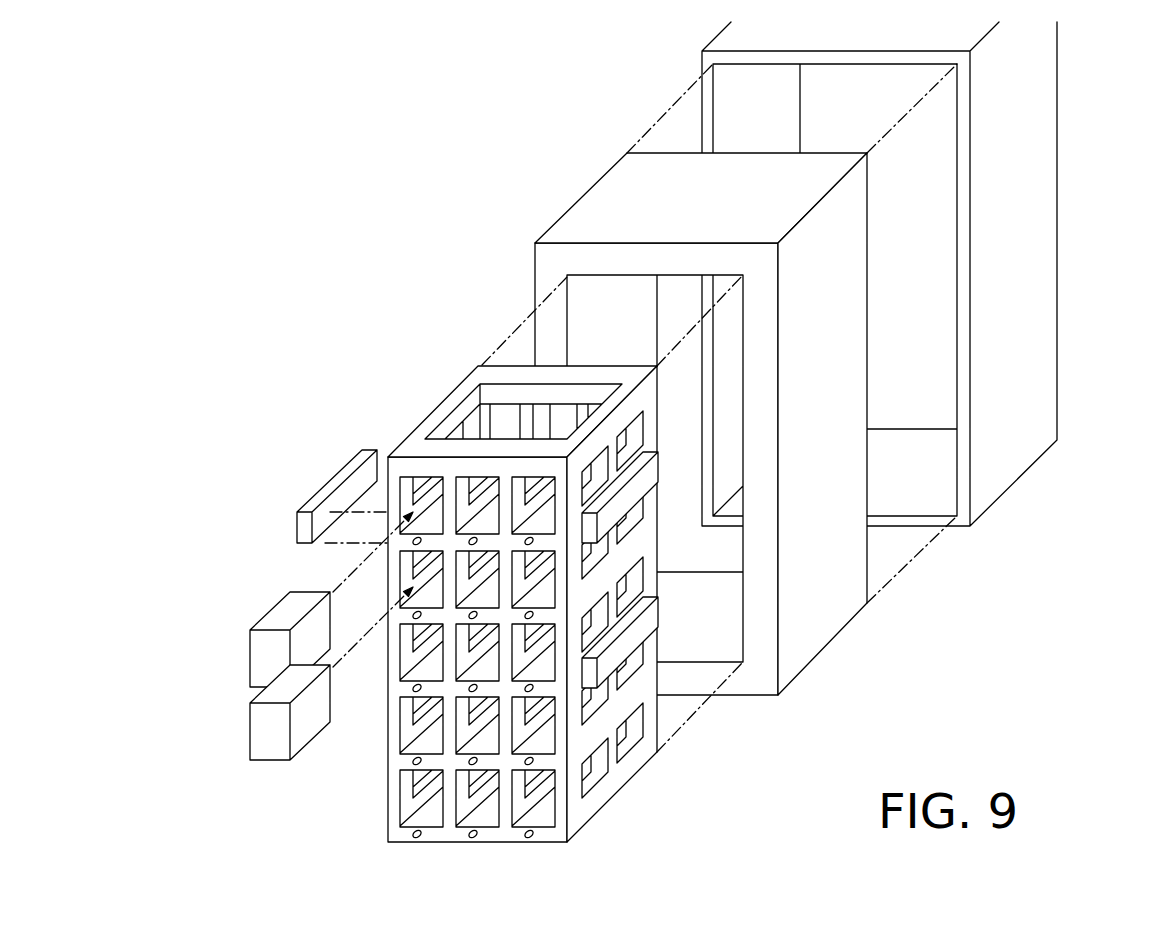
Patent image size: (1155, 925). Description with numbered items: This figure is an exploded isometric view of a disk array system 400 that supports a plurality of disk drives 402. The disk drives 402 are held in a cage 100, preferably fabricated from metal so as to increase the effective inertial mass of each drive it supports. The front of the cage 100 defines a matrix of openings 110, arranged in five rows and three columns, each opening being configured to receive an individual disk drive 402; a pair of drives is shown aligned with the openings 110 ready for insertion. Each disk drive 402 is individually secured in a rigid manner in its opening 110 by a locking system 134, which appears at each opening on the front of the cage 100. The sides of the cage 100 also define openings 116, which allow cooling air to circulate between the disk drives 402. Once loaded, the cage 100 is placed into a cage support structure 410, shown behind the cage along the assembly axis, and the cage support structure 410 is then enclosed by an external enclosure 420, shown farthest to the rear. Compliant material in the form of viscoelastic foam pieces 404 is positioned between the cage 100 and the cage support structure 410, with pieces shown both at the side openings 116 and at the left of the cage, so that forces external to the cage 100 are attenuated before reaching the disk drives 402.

The cage 100 is at (350, 824).
The openings 110 is at (402, 780).
The openings 116 is at (630, 441).
The locking system 134 is at (419, 838).
The disk array system 400 is at (298, 153).
The disk drives 402 is at (249, 712).
The viscoelastic foam pieces 404 is at (324, 494).
The cage support structure 410 is at (858, 294).
The external enclosure 420 is at (1045, 253).